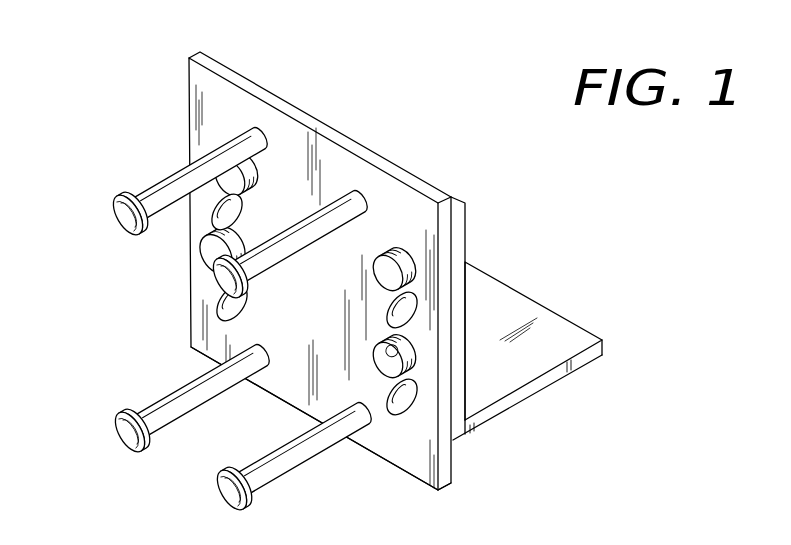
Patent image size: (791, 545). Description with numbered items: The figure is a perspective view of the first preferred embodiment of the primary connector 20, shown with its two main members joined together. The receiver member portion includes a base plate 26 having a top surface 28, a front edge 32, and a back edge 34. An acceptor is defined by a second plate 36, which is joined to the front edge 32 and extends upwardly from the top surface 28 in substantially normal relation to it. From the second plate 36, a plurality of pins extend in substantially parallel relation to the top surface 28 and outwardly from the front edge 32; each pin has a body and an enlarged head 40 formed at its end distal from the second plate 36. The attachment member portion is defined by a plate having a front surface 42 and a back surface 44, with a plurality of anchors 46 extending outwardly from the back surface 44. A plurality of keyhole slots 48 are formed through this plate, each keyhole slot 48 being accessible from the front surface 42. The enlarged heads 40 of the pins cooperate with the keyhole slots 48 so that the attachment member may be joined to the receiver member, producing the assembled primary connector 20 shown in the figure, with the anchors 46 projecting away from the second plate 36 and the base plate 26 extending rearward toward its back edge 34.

The primary connector 20 is at (73, 544).
The base plate 26 is at (553, 378).
The top surface 28 is at (549, 328).
The front edge 32 is at (463, 424).
The back edge 34 is at (605, 350).
The second plate 36 is at (457, 238).
The enlarged head 40 is at (203, 250).
The front surface 42 is at (452, 474).
The back surface 44 is at (210, 92).
The anchors 46 is at (172, 187).
The keyhole slots 48 is at (203, 297).